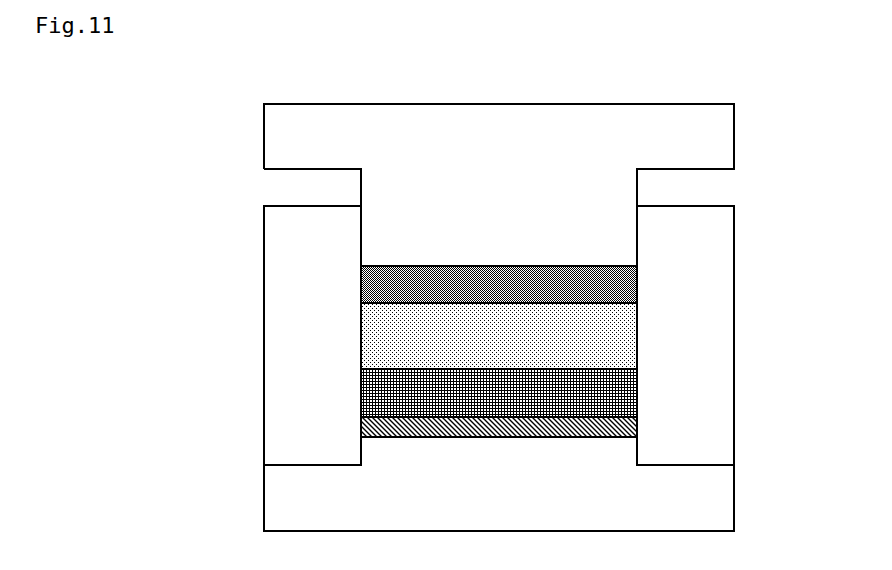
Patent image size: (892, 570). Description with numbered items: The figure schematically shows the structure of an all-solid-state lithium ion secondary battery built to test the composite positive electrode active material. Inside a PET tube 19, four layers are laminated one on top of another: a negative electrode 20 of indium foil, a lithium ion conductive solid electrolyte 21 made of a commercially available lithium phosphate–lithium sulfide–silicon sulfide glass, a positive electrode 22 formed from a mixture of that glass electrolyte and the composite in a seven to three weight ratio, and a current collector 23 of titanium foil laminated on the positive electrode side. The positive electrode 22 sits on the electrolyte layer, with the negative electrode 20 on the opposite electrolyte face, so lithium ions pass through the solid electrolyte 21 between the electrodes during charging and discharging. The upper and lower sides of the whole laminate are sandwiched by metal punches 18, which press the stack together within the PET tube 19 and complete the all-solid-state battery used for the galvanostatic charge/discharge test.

The metal punch 18 is at (703, 153).
The PET tube 19 is at (277, 340).
The negative electrode 20 is at (639, 275).
The lithium ion conductive solid electrolyte 21 is at (608, 345).
The positive electrode 22 is at (610, 397).
The current collector 23 is at (639, 423).